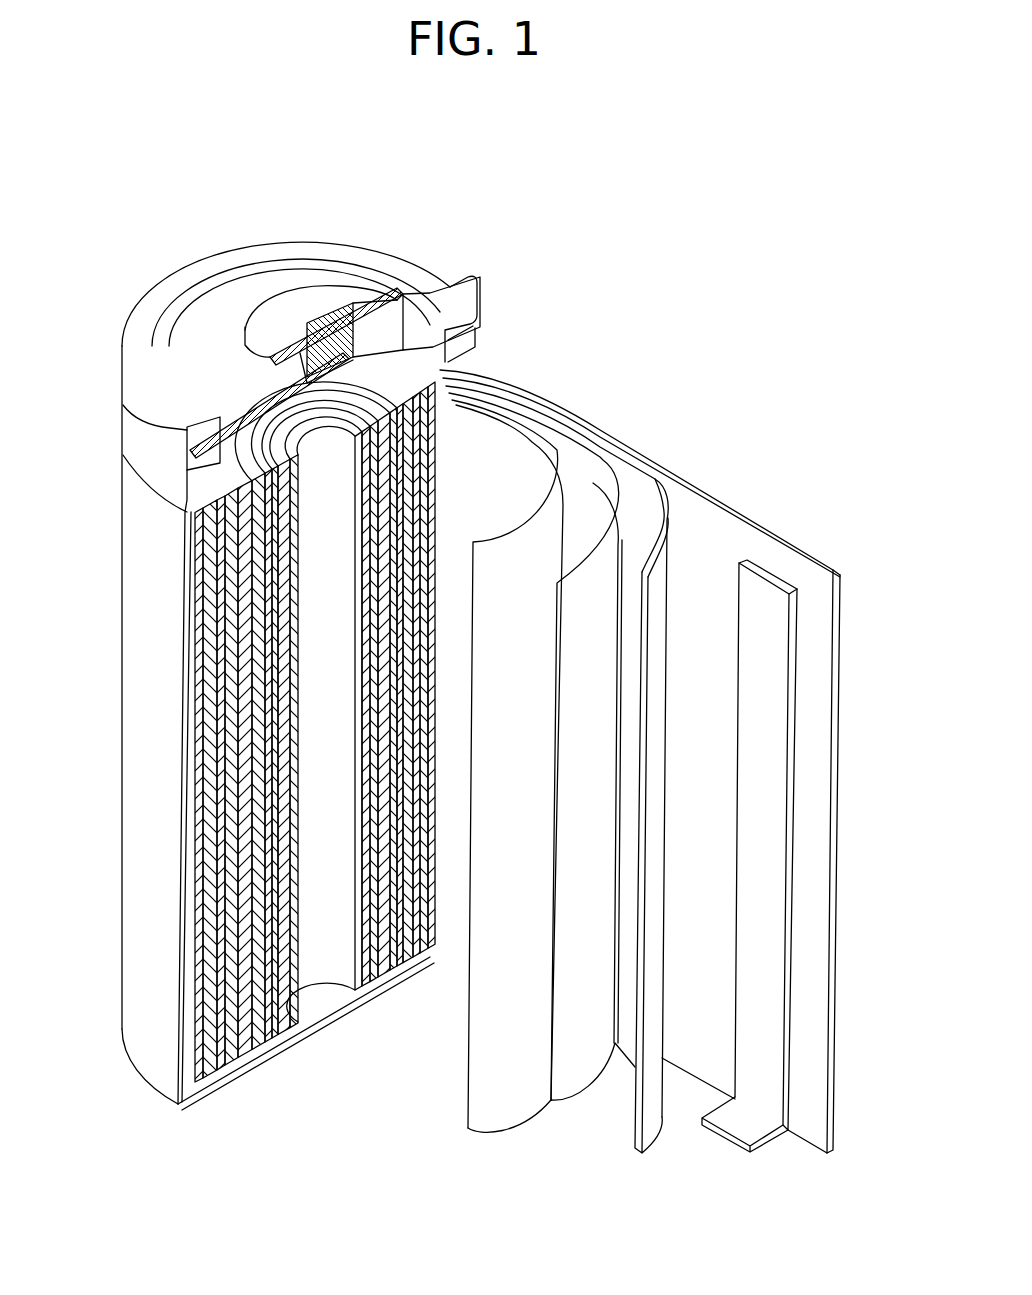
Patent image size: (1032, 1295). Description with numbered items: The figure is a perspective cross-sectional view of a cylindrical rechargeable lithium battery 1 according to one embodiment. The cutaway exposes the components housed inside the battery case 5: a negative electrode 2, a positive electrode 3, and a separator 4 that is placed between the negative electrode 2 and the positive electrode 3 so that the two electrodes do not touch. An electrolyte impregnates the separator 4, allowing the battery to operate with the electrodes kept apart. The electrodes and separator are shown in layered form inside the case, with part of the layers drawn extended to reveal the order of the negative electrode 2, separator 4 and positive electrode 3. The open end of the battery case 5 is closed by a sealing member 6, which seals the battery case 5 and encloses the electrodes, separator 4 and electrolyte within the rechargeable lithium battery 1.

The rechargeable lithium battery 1 is at (504, 228).
The negative electrode 2 is at (828, 818).
The positive electrode 3 is at (532, 442).
The separator 4 is at (593, 483).
The battery case 5 is at (130, 739).
The sealing member 6 is at (316, 285).